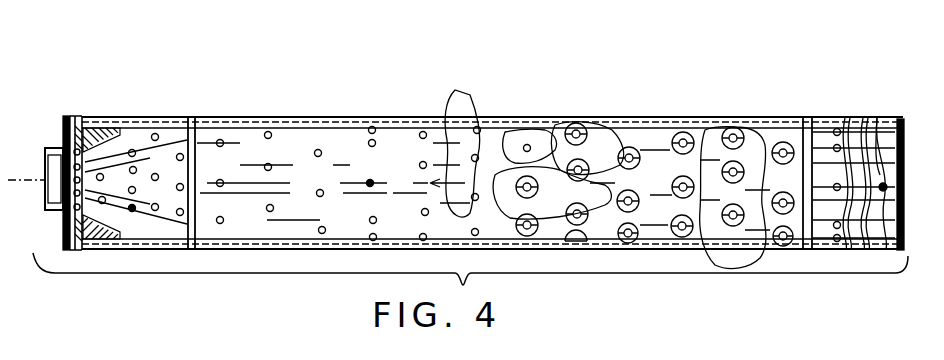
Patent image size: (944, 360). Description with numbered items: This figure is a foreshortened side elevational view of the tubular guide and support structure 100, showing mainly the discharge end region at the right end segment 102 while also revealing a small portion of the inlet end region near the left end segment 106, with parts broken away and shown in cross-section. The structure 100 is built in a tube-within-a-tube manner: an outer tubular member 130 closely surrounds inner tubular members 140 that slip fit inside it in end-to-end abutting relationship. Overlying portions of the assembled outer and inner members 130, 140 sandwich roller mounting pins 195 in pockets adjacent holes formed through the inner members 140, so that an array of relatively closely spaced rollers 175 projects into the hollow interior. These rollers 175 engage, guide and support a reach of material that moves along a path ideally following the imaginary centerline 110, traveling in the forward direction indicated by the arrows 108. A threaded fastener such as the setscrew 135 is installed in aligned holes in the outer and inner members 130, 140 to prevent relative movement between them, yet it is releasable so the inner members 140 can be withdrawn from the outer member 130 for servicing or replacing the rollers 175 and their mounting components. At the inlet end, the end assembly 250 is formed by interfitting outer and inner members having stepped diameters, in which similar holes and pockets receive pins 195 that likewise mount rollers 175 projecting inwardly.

The tubular guide and support structure 100 is at (729, 86).
The right end segment 102 is at (900, 116).
The left end segment 106 is at (438, 117).
The arrows 108 is at (416, 203).
The centerline 110 is at (22, 184).
The outer tubular member 130 is at (508, 112).
The setscrew 135 is at (873, 120).
The inner tubular member 140 is at (550, 122).
The rollers 175 is at (133, 110).
The roller mounting pins 195 is at (700, 117).
The end assembly 250 is at (95, 114).